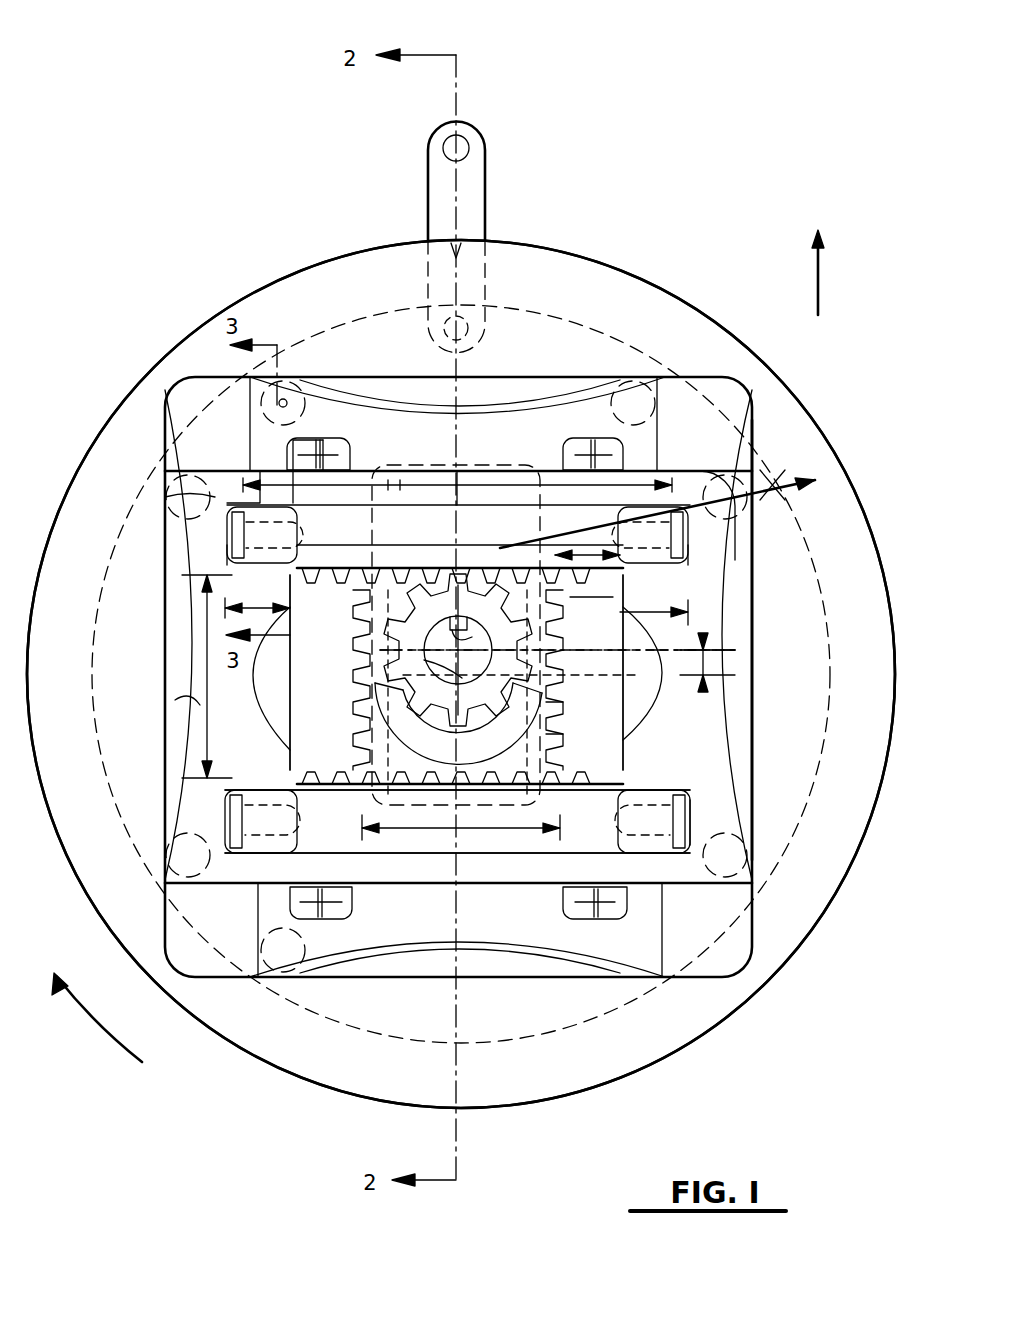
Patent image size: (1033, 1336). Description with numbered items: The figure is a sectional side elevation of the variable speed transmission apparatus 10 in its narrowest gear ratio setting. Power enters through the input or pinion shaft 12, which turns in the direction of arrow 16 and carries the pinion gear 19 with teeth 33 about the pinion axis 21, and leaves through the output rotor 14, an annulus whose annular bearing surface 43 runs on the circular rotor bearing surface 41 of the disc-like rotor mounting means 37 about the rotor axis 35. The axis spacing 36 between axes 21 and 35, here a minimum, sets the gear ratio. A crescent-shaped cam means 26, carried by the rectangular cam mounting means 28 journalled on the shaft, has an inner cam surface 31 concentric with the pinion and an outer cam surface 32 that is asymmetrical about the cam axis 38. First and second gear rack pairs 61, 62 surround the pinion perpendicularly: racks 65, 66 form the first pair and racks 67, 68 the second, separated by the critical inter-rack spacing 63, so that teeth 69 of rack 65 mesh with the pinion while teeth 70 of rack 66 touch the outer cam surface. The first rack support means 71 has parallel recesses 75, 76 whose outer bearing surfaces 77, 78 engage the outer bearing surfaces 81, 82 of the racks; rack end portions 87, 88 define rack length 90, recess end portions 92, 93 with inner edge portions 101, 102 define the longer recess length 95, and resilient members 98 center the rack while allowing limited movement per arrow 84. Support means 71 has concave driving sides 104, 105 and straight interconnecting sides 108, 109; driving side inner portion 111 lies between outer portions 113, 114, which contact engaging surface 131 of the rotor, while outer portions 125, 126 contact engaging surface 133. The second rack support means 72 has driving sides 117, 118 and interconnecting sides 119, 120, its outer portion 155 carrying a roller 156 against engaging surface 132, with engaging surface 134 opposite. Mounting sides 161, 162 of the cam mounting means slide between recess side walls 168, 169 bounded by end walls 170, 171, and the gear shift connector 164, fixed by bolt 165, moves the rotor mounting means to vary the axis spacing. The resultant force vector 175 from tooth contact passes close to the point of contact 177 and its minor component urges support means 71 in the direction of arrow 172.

The variable speed transmission apparatus 10 is at (707, 200).
The input or pinion shaft 12 is at (498, 638).
The output rotor 14 is at (595, 280).
The arrow 16 is at (108, 1017).
The pinion gear 19 is at (550, 640).
The pinion axis 21 is at (445, 632).
The crescent-shaped cam means 26 is at (560, 718).
The cam mounting means 28 is at (560, 748).
The inner cam surface 31 is at (432, 693).
The outer cam surface 32 is at (410, 788).
The pinion teeth 33 is at (558, 604).
The rotor axis 35 is at (352, 668).
The axis spacing 36 is at (650, 700).
The rotor mounting means 37 is at (830, 840).
The cam axis 38 is at (482, 452).
The rotor bearing surface 41 is at (598, 322).
The annular bearing surface 43 is at (318, 1025).
The first gear rack pair 61 is at (725, 657).
The second gear rack pair 62 is at (553, 405).
The inter-rack spacing 63 is at (215, 745).
The gear rack 65 is at (457, 487).
The gear rack 66 is at (612, 850).
The gear rack 67 is at (300, 800).
The gear rack 68 is at (640, 770).
The rack teeth 69 is at (448, 572).
The rack teeth 70 is at (488, 765).
The first rack support means 71 is at (160, 385).
The second rack support means 72 is at (752, 385).
The recess 75 is at (225, 555).
The recess 76 is at (265, 850).
The outer bearing surface 77 is at (365, 512).
The outer bearing surface 78 is at (440, 856).
The outer bearing surface 81 is at (472, 492).
The outer bearing surface 82 is at (365, 888).
The arrow 84 is at (583, 545).
The rack end portion 87 is at (240, 498).
The rack end portion 88 is at (690, 555).
The rack length 90 is at (418, 488).
The recess end portion 92 is at (165, 495).
The recess end portion 93 is at (702, 485).
The recess length 95 is at (257, 602).
The resilient members 98 is at (333, 445).
The inner edge portion 101 is at (395, 566).
The inner edge portion 102 is at (654, 602).
The driving side 104 is at (180, 720).
The driving side 105 is at (745, 705).
The interconnecting side 108 is at (560, 458).
The interconnecting side 109 is at (503, 900).
The driving side inner portion 111 is at (180, 680).
The driving side outer portion 113 is at (150, 497).
The driving side outer portion 114 is at (165, 878).
The driving side 117 is at (408, 398).
The driving side 118 is at (385, 962).
The interconnecting side 119 is at (255, 905).
The interconnecting side 120 is at (665, 900).
The driving side outer portion 125 is at (752, 462).
The driving side outer portion 126 is at (760, 872).
The engaging surface 131 is at (165, 640).
The engaging surface 132 is at (497, 380).
The engaging surface 133 is at (752, 620).
The engaging surface 134 is at (515, 960).
The outer portion 155 is at (300, 385).
The roller 156 is at (232, 390).
The mounting side 161 is at (352, 740).
The mounting side 162 is at (555, 660).
The gear shift connector 164 is at (432, 165).
The bolt 165 is at (485, 300).
The recess side wall 168 is at (415, 735).
The recess side wall 169 is at (505, 515).
The recess end wall 170 is at (442, 512).
The recess end wall 171 is at (550, 803).
The arrow 172 is at (815, 272).
The resultant force vector 175 is at (795, 495).
The point of contact 177 is at (770, 482).